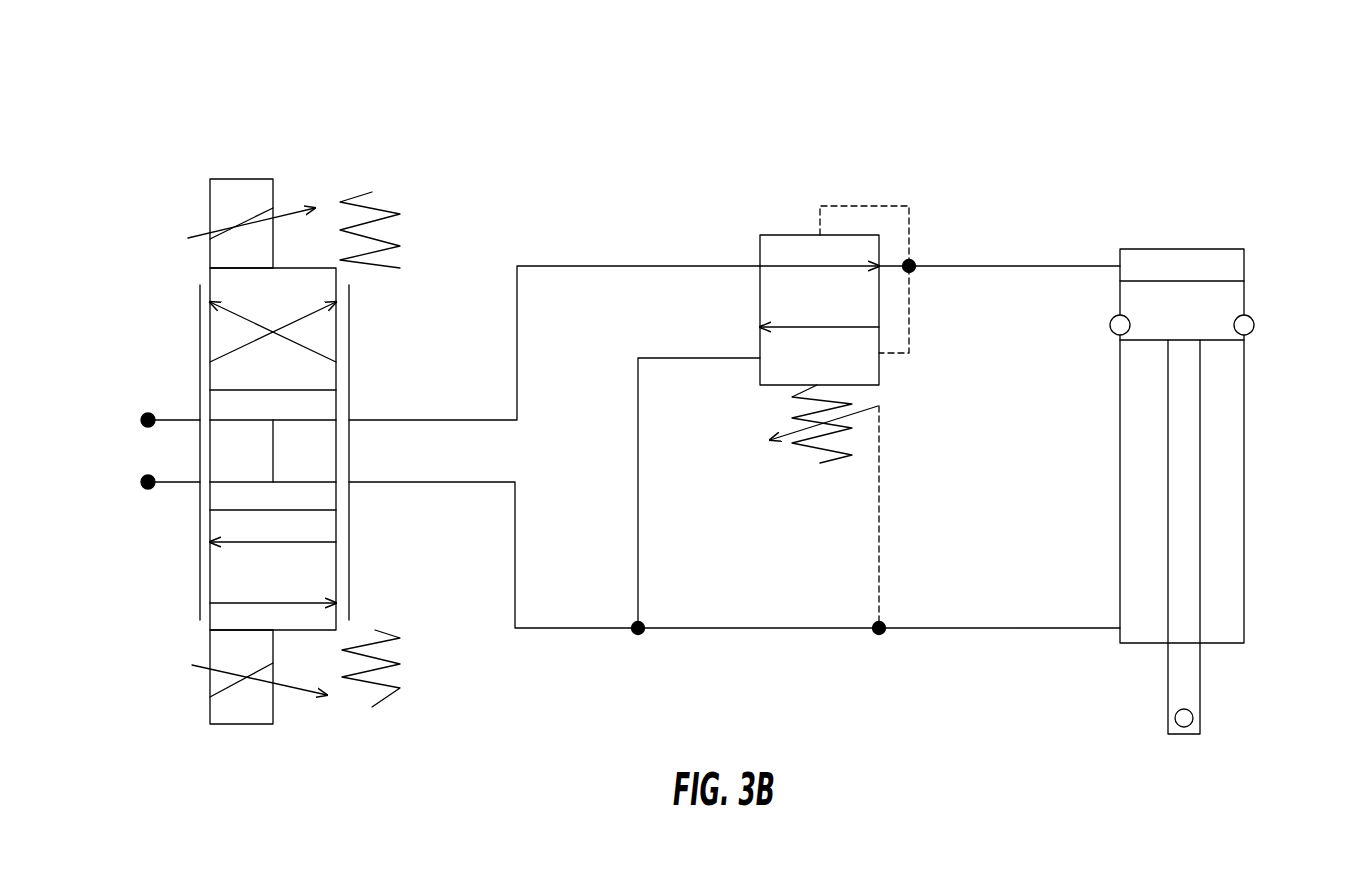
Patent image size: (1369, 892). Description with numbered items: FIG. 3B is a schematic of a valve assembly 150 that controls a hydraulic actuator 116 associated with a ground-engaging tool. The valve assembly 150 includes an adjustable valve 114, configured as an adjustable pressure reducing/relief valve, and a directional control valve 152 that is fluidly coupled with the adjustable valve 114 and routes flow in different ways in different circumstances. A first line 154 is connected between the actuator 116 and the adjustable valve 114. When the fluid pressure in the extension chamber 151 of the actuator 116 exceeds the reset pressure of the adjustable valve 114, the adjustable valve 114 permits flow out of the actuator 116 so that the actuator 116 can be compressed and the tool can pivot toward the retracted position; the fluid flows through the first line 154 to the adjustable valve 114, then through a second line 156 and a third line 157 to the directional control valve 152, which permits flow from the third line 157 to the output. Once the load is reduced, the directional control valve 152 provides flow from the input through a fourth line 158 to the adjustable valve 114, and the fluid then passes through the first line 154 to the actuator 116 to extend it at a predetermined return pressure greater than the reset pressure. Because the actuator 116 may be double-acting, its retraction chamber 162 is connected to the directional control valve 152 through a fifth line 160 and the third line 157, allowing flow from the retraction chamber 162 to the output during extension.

The valve assembly 150 is at (232, 108).
The directional control valve 152 is at (208, 278).
The fourth line 158 is at (547, 266).
The third line 157 is at (568, 630).
The second line 156 is at (638, 543).
The fifth line 160 is at (933, 632).
The adjustable valve 114 is at (795, 235).
The first line 154 is at (967, 266).
The actuator 116 is at (1244, 400).
The extension chamber 151 is at (1178, 265).
The retraction chamber 162 is at (1226, 527).